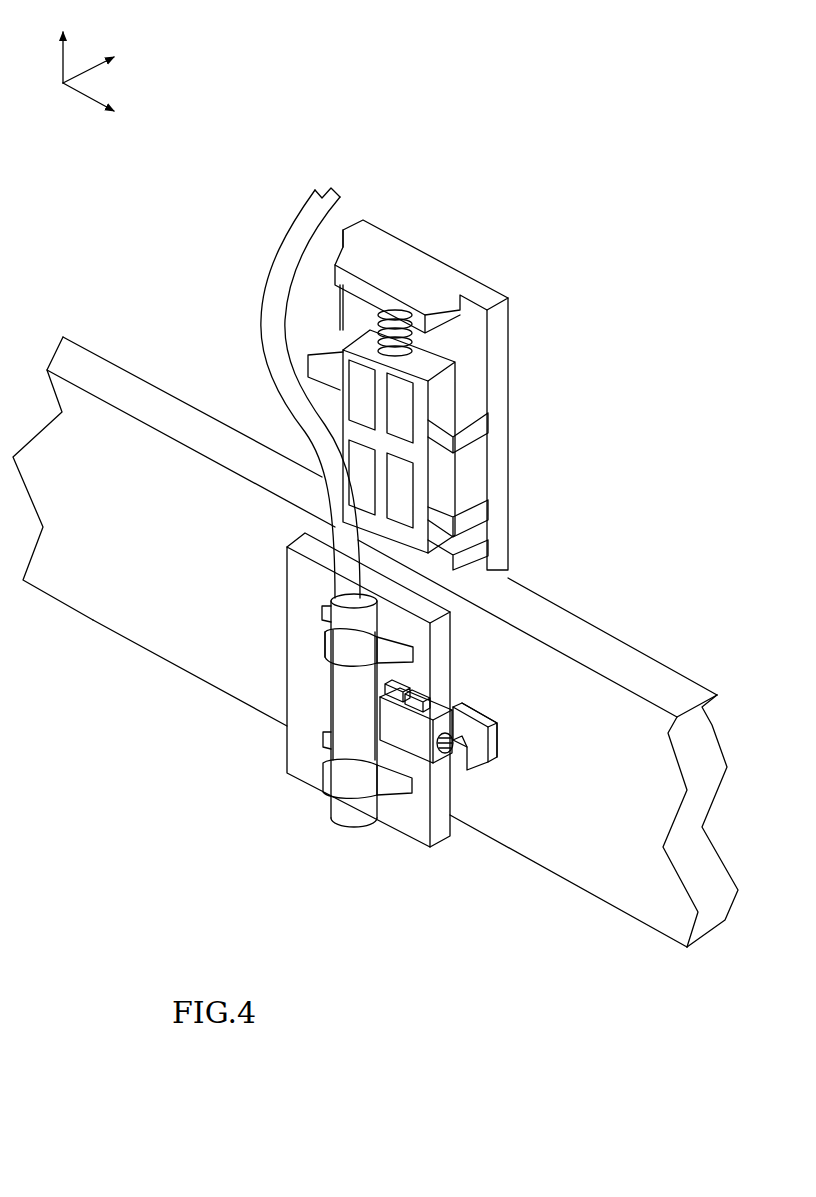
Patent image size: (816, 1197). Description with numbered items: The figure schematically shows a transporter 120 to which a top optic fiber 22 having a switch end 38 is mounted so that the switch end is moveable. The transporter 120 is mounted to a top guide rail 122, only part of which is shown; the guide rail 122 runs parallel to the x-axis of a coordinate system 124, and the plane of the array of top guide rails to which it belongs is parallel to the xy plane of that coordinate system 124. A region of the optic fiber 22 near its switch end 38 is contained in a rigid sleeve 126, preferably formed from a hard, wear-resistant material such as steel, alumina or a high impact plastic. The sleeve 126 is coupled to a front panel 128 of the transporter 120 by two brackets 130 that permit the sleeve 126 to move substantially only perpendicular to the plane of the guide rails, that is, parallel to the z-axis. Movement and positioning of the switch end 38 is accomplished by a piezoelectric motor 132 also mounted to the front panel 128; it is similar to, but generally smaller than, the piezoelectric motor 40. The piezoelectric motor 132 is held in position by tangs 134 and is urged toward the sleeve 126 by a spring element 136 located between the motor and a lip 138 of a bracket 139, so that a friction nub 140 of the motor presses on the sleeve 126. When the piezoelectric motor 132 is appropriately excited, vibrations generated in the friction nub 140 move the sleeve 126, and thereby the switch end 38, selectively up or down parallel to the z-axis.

The top optic fiber 22 is at (245, 269).
The switch end 38 is at (340, 843).
The piezoelectric motor 40 is at (449, 249).
The transporter 120 is at (479, 387).
The top guide rail 122 is at (577, 779).
The coordinate system 124 is at (77, 124).
The rigid sleeve 126 is at (340, 707).
The front panel 128 is at (305, 678).
The brackets 130 is at (325, 633).
The piezoelectric motor 132 is at (422, 776).
The tangs 134 is at (410, 672).
The spring element 136 is at (447, 760).
The lip 138 is at (472, 762).
The bracket 139 is at (493, 782).
The friction nub 140 is at (340, 737).